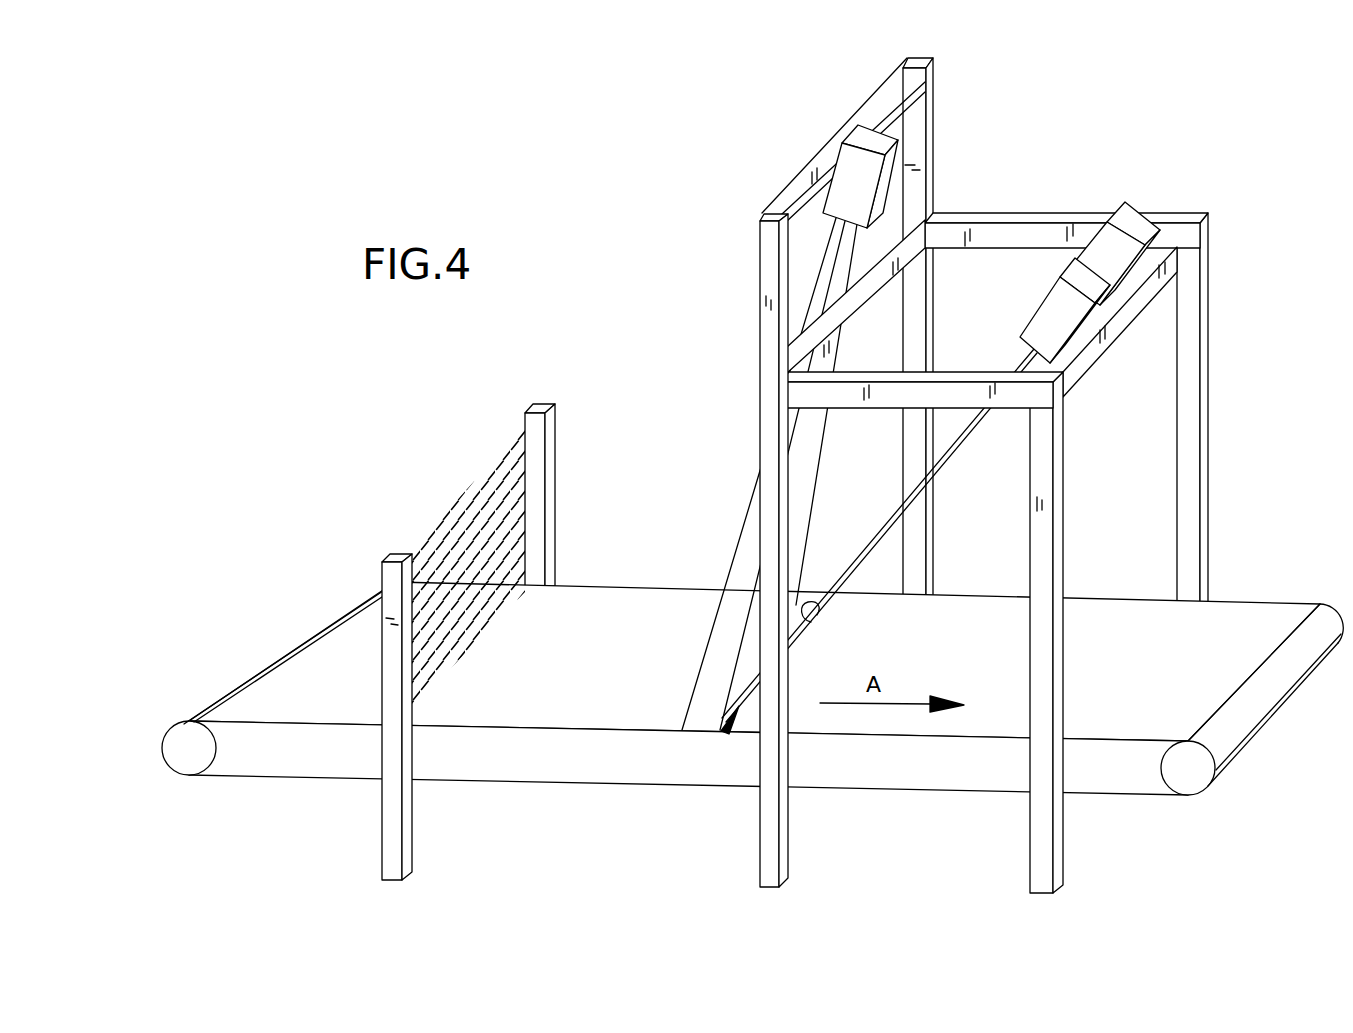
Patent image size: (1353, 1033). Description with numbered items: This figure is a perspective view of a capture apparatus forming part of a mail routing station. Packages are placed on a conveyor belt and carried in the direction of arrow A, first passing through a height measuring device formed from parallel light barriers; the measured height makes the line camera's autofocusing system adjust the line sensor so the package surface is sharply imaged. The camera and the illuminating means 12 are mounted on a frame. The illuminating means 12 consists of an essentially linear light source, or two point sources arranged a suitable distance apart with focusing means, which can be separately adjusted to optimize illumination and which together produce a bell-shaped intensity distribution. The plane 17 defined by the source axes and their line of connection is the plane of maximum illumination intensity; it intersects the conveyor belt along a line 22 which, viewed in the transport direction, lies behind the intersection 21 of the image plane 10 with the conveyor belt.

The image plane 10 is at (725, 650).
The illuminating means 12 is at (1053, 313).
The plane of maximum illumination intensity 17 is at (866, 547).
The intersection of image plane with conveyor belt 21 is at (713, 690).
The line of intersection of plane of maximum illumination intensity with conveyor be 22 is at (815, 623).